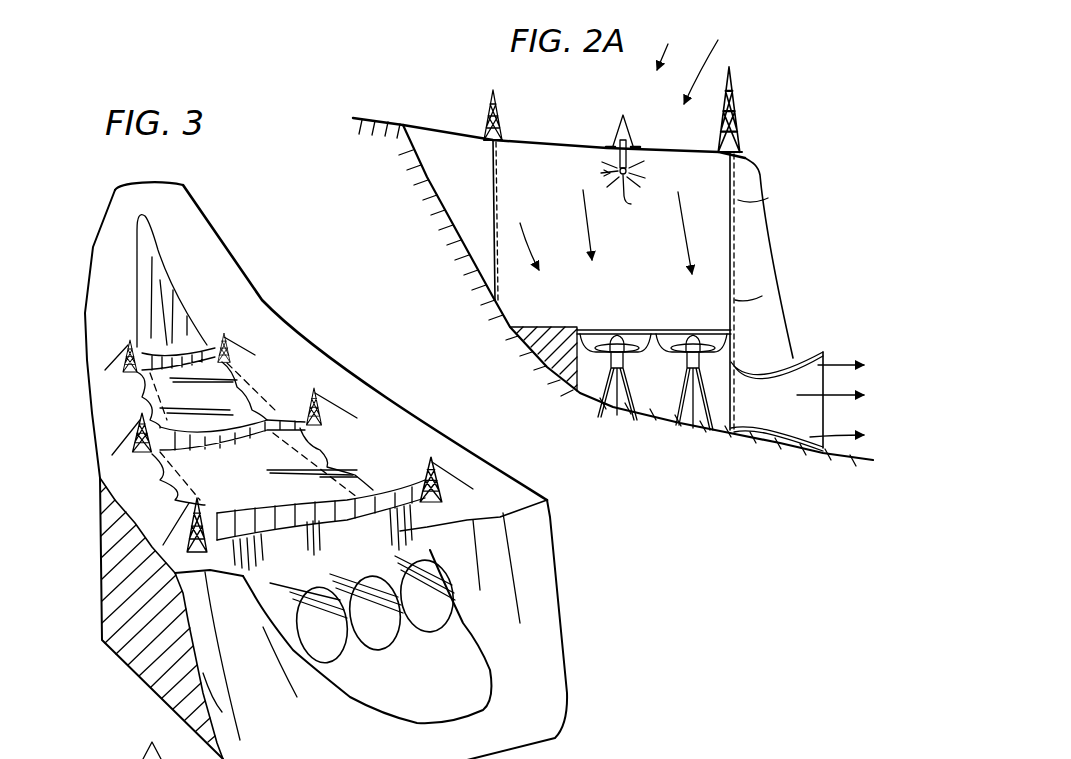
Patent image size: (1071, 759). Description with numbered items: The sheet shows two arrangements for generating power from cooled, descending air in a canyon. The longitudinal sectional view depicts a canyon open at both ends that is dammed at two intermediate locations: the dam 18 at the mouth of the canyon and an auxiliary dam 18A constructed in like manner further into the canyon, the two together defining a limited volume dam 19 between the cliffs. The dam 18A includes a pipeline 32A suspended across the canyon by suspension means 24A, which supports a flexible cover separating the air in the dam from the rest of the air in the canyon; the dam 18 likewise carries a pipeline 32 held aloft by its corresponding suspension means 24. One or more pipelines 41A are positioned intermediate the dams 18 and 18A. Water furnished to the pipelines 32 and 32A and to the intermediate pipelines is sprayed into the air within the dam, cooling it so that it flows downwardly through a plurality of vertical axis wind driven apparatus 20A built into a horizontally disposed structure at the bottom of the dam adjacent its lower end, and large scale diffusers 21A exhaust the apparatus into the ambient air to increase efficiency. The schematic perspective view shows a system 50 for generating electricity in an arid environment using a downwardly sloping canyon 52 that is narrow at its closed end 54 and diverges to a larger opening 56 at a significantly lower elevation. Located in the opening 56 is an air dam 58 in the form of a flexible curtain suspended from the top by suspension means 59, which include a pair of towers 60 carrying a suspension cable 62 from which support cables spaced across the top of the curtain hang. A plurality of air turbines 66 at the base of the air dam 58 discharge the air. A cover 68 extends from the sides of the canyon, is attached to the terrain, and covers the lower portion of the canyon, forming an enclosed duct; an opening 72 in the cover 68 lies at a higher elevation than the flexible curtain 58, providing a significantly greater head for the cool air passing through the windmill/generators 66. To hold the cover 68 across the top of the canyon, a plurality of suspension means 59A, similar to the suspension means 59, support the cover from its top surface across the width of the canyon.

In FIG. 2A, the dam 18 is at (746, 198).
In FIG. 2A, the auxiliary dam 18A is at (493, 198).
In FIG. 2A, the limited volume dam 19 is at (619, 146).
In FIG. 2A, the vertical axis wind driven apparatus 20A is at (722, 333).
In FIG. 2A, the large scale diffusers 21A is at (813, 357).
In FIG. 2A, the downstream tower 24 is at (752, 82).
In FIG. 2A, the suspension means 24A is at (480, 103).
In FIG. 2A, the pipeline 32 is at (733, 151).
In FIG. 2A, the pipeline 32A is at (494, 135).
In FIG. 2A, the pipelines 41A is at (623, 176).
In FIG. 3, the system 50 is at (370, 302).
In FIG. 3, the downwardly sloping canyon 52 is at (174, 257).
In FIG. 3, the closed end 54 is at (148, 226).
In FIG. 3, the larger opening 56 is at (420, 542).
In FIG. 3, the air dam 58 is at (352, 552).
In FIG. 3, the suspension means 59 is at (413, 462).
In FIG. 3, the suspension means 59A is at (298, 415).
In FIG. 3, the towers 60 is at (190, 523).
In FIG. 3, the suspension cable 62 is at (410, 485).
In FIG. 3, the air turbines 66 is at (462, 602).
In FIG. 3, the cover 68 is at (227, 410).
In FIG. 3, the opening 72 is at (142, 297).